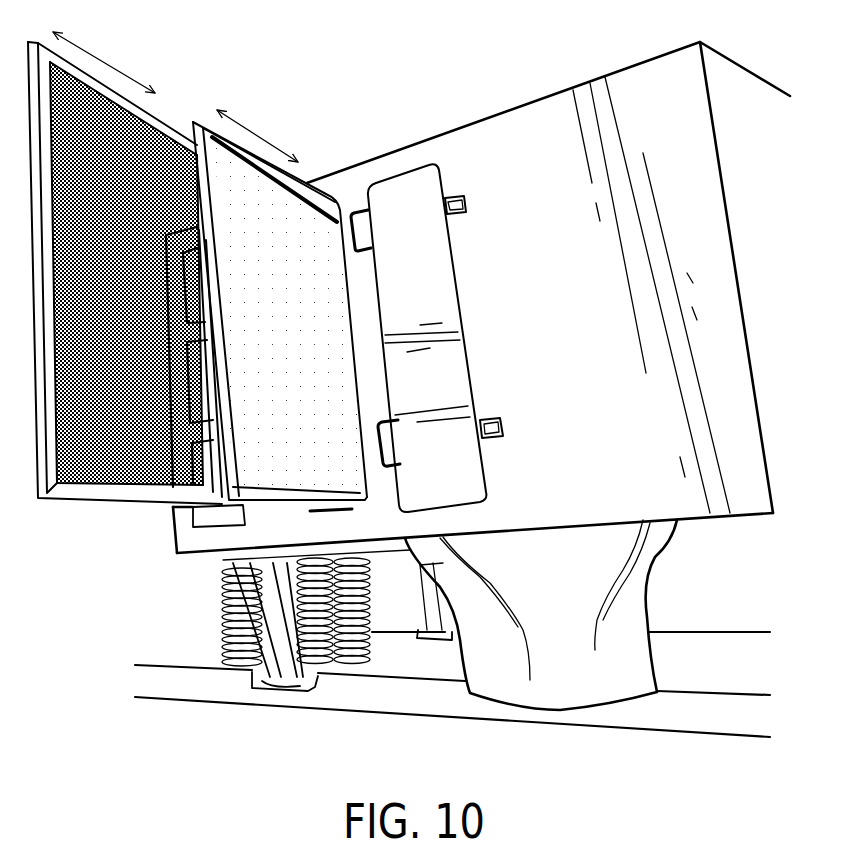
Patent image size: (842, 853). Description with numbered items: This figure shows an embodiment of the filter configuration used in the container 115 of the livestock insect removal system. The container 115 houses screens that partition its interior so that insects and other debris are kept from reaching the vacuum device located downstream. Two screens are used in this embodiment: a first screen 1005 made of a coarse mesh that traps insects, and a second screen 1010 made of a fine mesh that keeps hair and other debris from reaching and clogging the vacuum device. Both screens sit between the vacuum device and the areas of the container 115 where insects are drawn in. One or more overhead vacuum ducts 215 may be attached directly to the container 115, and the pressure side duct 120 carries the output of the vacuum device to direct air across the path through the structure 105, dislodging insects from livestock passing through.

The structure 105 is at (197, 685).
The container 115 is at (519, 124).
The pressure side duct 120 is at (628, 608).
The overhead vacuum ducts 215 is at (222, 623).
The first screen 1005 is at (153, 137).
The second screen 1010 is at (290, 210).